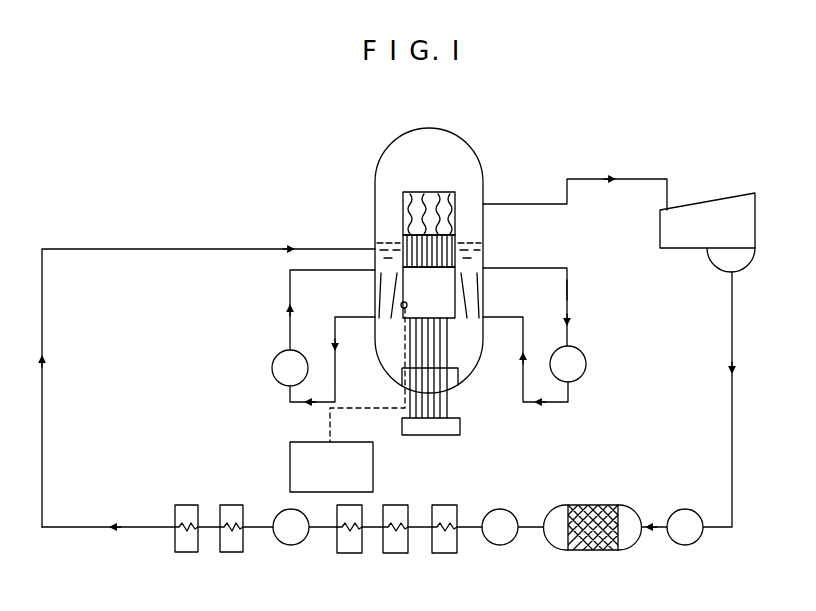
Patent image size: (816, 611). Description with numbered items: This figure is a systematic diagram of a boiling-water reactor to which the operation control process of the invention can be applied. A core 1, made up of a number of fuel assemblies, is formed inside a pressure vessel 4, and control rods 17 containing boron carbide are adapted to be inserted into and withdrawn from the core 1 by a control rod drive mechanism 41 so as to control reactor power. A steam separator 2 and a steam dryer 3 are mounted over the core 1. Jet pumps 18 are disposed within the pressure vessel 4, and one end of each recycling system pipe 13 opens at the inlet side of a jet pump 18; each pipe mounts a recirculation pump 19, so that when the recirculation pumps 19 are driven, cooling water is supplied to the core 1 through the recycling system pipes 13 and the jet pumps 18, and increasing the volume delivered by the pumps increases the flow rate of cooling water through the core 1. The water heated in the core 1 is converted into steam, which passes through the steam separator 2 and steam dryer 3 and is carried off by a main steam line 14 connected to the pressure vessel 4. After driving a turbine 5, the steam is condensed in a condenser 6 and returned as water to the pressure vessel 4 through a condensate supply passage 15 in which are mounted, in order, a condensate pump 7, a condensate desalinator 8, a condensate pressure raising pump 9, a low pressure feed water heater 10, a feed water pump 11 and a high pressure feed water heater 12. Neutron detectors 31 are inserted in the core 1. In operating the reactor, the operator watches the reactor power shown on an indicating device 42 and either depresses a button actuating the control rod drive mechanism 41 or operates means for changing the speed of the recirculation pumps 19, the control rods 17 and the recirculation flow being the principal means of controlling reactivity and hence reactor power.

The core 1 is at (403, 270).
The steam separator 2 is at (403, 238).
The steam dryer 3 is at (403, 192).
The pressure vessel 4 is at (447, 129).
The turbine 5 is at (712, 210).
The condenser 6 is at (745, 270).
The condensate pump 7 is at (685, 509).
The condensate desalinator 8 is at (611, 552).
The condensate pressure raising pump 9 is at (500, 546).
The low pressure feed water heater 10 is at (457, 561).
The feed water pump 11 is at (291, 547).
The high pressure feed water heater 12 is at (243, 561).
The recycling system pipes 13 is at (567, 298).
The main steam line 14 is at (624, 178).
The condensate supply passage 15 is at (733, 475).
The control rods 17 is at (445, 355).
The jet pumps 18 is at (375, 290).
The recirculation pumps 19 is at (275, 356).
The neutron detectors 31 is at (404, 308).
The control rod drive mechanism 41 is at (446, 436).
The indicating device 42 is at (290, 452).